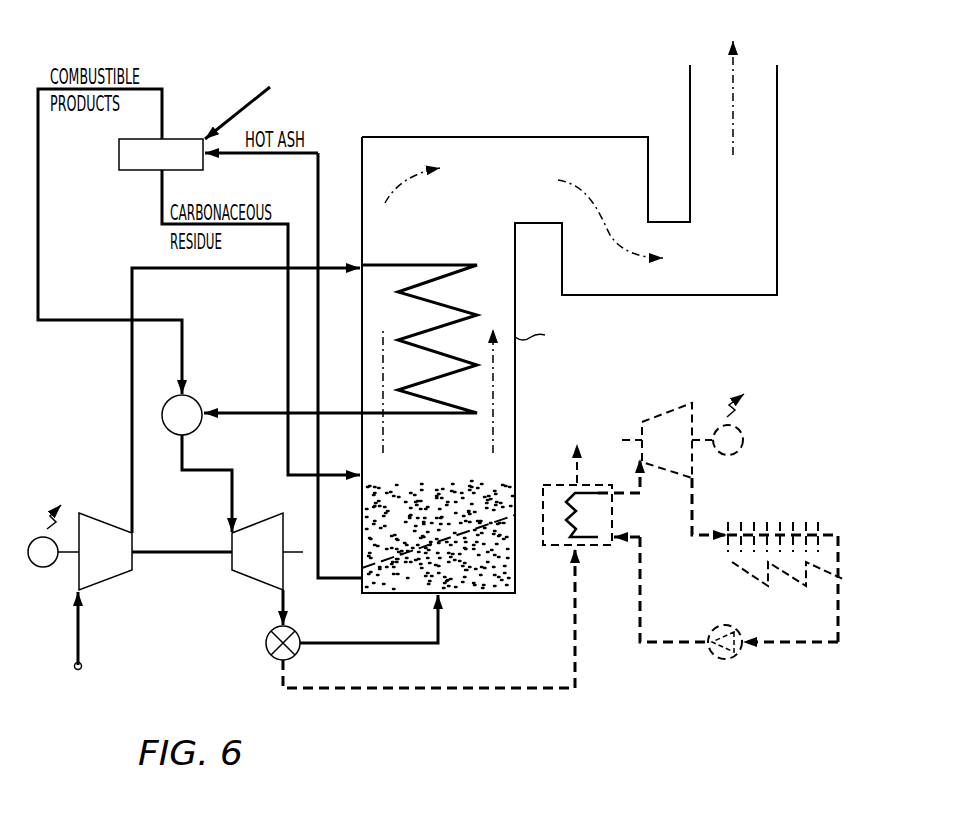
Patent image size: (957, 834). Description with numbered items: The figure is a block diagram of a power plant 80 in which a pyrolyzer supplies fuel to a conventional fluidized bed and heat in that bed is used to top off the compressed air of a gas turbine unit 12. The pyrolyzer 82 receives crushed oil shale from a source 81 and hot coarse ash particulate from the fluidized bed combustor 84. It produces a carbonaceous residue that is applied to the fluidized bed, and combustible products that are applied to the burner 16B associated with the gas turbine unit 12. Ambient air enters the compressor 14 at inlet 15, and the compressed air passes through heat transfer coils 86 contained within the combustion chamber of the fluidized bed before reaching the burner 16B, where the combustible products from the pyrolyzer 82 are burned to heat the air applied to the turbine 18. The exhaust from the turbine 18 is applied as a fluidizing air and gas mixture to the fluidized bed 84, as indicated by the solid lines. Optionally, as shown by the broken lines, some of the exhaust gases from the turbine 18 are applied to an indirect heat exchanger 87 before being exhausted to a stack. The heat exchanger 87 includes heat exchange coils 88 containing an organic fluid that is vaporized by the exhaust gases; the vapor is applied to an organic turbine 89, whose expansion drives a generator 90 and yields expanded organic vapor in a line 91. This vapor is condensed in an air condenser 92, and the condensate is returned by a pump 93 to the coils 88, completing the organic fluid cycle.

The gas turbine unit 12 is at (165, 559).
The compressor 14 is at (110, 524).
The ambient air inlet 15 is at (78, 638).
The burner 16B is at (198, 394).
The turbine 18 is at (261, 522).
The plant 80 is at (427, 60).
The source of crushed oil shale 81 is at (222, 108).
The pyrolyzer 82 is at (183, 139).
The fluidized bed combustor 84 is at (515, 383).
The heat transfer coils 86 is at (462, 308).
The indirect heat exchanger 87 is at (544, 546).
The heat exchange coils 88 is at (578, 524).
The organic turbine 89 is at (650, 420).
The generator 90 is at (743, 440).
The line 91 is at (692, 500).
The air condenser 92 is at (782, 520).
The pump 93 is at (727, 659).